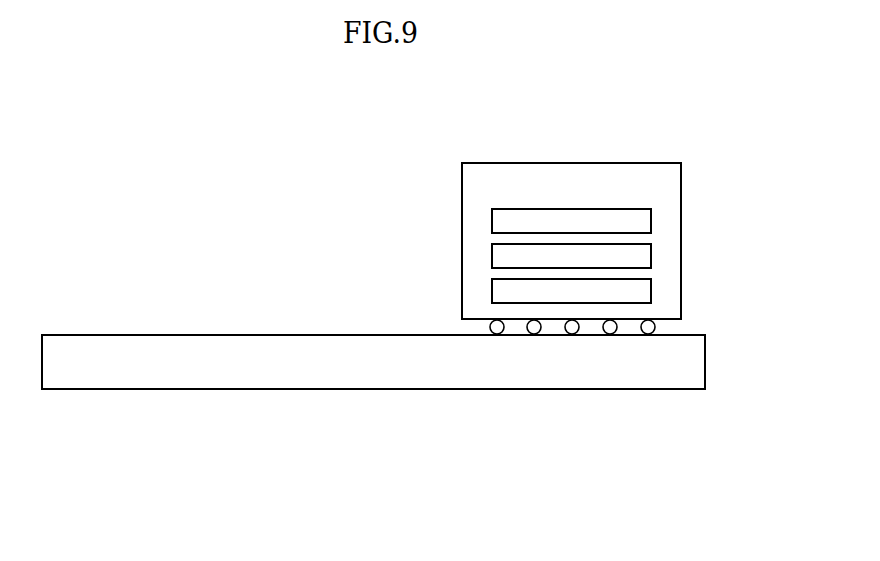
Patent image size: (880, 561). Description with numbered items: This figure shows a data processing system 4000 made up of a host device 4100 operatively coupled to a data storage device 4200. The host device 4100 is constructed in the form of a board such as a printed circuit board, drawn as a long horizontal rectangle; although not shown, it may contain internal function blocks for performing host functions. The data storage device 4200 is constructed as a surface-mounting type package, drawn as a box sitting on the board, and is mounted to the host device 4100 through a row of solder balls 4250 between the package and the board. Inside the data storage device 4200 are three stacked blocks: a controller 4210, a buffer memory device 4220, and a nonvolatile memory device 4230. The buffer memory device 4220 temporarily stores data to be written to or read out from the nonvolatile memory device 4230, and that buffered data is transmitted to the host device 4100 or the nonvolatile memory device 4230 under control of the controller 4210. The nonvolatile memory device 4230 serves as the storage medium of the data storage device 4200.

The data processing system 4000 is at (100, 108).
The host device 4100 is at (373, 362).
The data storage device 4200 is at (571, 241).
The controller 4210 is at (571, 222).
The buffer memory device 4220 is at (571, 257).
The nonvolatile memory device 4230 is at (571, 292).
The solder balls 4250 is at (663, 326).